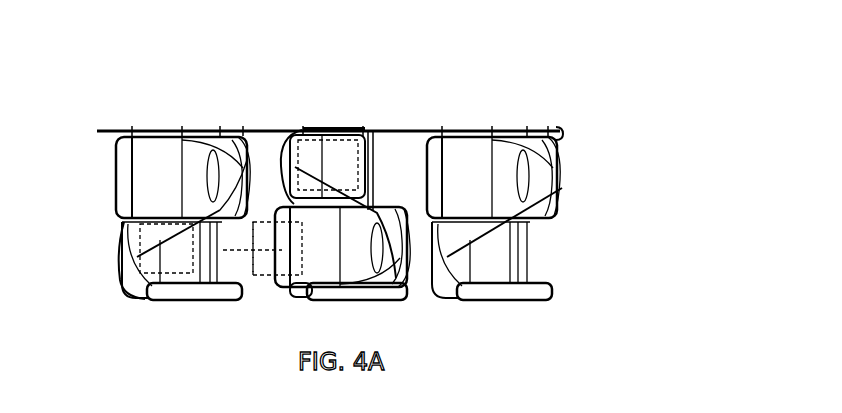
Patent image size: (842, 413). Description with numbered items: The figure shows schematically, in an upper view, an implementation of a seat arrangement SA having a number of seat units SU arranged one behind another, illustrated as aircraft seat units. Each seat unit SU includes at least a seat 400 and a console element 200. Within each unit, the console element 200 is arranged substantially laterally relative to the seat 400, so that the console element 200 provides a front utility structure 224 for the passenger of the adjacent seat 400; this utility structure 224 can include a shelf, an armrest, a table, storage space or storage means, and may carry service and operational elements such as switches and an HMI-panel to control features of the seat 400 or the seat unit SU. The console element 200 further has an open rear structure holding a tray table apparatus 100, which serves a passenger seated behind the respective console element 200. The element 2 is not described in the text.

The rail 2 is at (374, 116).
The tray table apparatus 100 is at (115, 224).
The seat 400 is at (157, 160).
The front utility structure 224 is at (120, 266).
The console element 200 is at (139, 300).
The seat unit SU is at (172, 76).
The seat arrangement SA is at (626, 92).